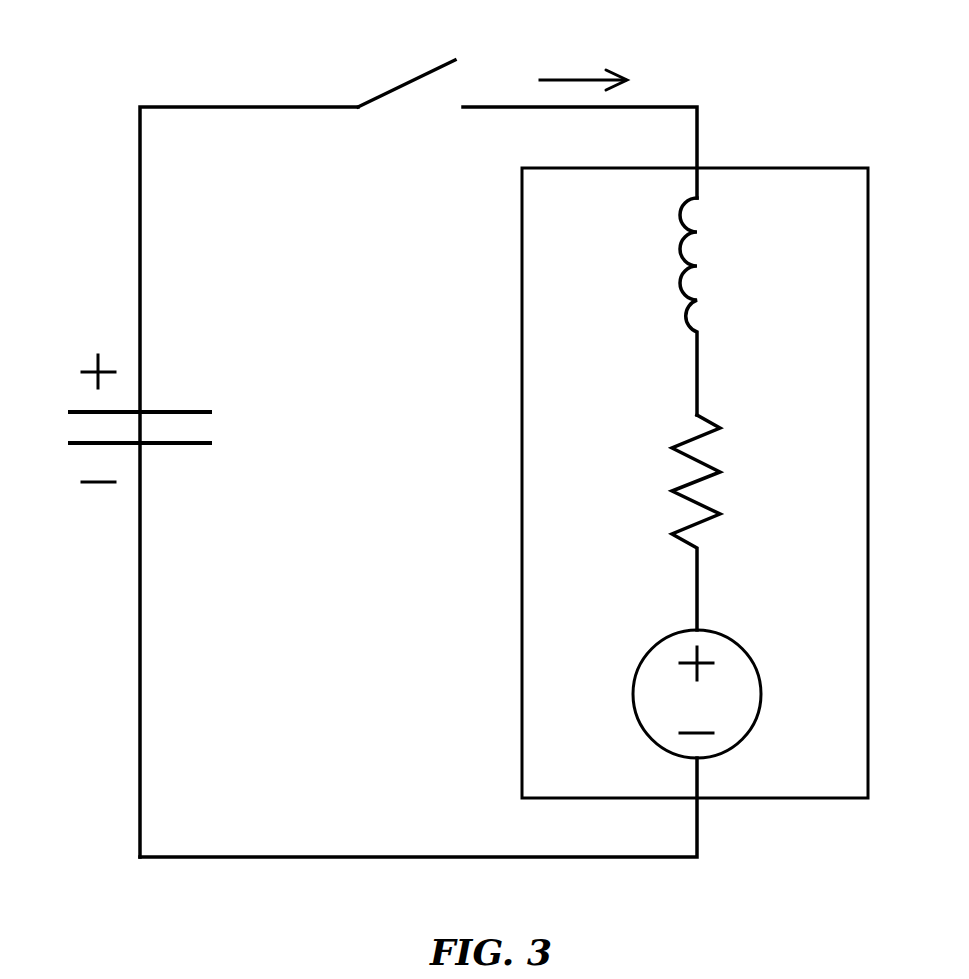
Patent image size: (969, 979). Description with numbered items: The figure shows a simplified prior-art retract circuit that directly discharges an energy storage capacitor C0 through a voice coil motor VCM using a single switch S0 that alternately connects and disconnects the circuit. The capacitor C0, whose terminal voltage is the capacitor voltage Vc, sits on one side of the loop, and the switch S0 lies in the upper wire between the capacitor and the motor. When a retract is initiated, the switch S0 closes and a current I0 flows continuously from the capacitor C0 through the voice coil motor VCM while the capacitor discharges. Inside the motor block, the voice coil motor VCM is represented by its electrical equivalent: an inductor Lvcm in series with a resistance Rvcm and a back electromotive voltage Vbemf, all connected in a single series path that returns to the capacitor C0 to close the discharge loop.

The switch S0 is at (455, 88).
The current I0 is at (583, 65).
The voice coil motor VCM is at (790, 168).
The inductor Lvcm is at (739, 306).
The resistance Rvcm is at (746, 522).
The back electromotive voltage Vbemf is at (729, 670).
The capacitor voltage Vc is at (65, 418).
The capacitor C0 is at (165, 426).